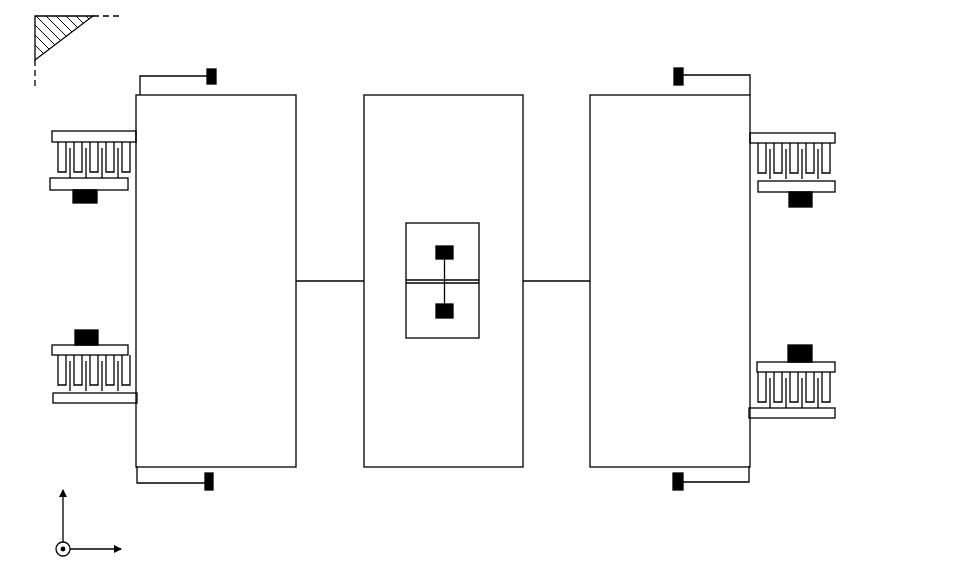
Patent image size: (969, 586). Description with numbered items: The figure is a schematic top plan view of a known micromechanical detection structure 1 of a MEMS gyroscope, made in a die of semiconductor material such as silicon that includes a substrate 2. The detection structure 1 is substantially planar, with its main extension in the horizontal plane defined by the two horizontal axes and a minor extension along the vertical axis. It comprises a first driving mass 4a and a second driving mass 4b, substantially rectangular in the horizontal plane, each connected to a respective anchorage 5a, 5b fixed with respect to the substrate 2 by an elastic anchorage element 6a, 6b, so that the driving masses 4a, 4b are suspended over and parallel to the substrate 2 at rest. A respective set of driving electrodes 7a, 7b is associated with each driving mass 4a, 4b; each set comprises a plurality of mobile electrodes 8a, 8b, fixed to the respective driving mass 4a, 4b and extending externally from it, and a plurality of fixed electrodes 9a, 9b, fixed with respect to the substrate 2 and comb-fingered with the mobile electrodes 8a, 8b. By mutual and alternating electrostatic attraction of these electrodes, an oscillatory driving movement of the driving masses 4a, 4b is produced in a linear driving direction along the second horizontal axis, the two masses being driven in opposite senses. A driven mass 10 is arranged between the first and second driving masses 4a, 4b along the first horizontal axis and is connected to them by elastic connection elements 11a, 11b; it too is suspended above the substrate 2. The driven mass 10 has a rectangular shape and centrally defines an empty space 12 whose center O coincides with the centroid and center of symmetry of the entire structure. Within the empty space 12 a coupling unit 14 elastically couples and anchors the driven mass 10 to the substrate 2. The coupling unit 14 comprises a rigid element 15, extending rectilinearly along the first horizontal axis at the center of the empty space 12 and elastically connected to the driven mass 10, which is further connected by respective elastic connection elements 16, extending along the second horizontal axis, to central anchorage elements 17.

The micromechanical detection structure 1 is at (800, 60).
The substrate 2 is at (58, 44).
The first driving mass 4a is at (600, 105).
The second driving mass 4b is at (262, 105).
The anchorage 5a is at (674, 75).
The anchorage 5b is at (216, 70).
The elastic anchorage element 6a is at (725, 75).
The elastic anchorage element 6b is at (160, 76).
The set of driving electrodes 7a is at (818, 168).
The set of driving electrodes 7b is at (62, 165).
The mobile electrodes 8a is at (800, 165).
The mobile electrodes 8b is at (110, 166).
The fixed electrodes 9a is at (777, 178).
The fixed electrodes 9b is at (122, 180).
The driven mass 10 is at (458, 90).
The elastic connection element 11a is at (555, 282).
The elastic connection element 11b is at (328, 282).
The empty space 12 is at (425, 328).
The coupling unit 14 is at (423, 240).
The rigid element 15 is at (416, 290).
The elastic connection elements 16 is at (437, 272).
The central anchorage elements 17 is at (444, 246).
The center O is at (448, 276).